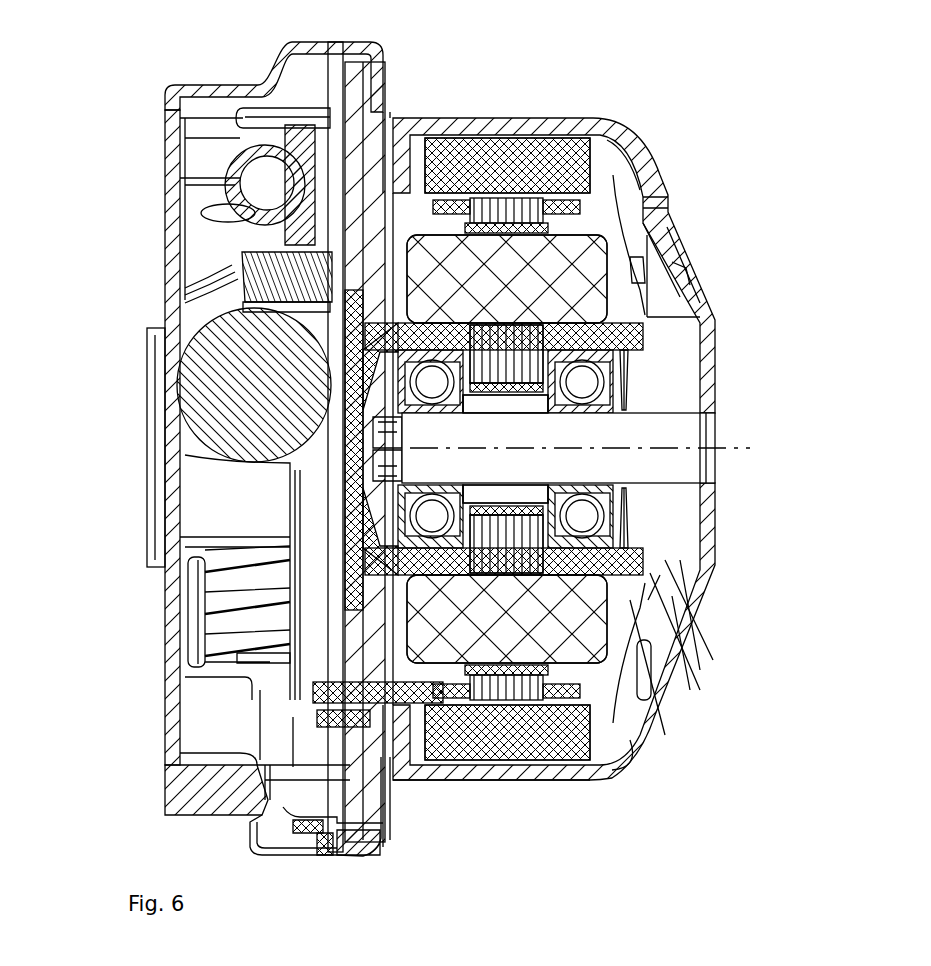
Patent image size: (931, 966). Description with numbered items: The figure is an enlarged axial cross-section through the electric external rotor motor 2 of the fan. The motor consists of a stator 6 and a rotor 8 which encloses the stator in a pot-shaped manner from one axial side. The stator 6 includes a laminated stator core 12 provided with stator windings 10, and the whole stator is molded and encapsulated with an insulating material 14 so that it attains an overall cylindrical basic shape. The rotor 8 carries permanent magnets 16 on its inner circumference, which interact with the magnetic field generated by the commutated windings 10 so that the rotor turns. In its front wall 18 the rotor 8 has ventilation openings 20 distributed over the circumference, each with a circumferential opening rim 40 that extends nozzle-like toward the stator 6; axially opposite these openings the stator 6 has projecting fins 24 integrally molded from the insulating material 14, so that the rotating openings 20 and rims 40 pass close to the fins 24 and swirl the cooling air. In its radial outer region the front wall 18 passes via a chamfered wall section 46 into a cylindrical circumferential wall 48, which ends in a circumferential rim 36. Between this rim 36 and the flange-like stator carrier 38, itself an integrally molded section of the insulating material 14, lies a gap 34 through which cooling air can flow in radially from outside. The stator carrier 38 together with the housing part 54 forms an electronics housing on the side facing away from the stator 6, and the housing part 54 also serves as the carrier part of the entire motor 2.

The electric external rotor motor 2 is at (478, 62).
The stator 6 is at (612, 197).
The rotor 8 is at (611, 123).
The stator windings 10 is at (515, 285).
The laminated stator core 12 is at (527, 370).
The insulating material 14 is at (598, 208).
The permanent magnets 16 is at (516, 145).
The front wall 18 is at (678, 668).
The ventilation openings 20 is at (680, 265).
The projecting fins 24 is at (645, 263).
The gap 34 is at (388, 112).
The circumferential rim 36 is at (410, 782).
The stator carrier 38 is at (360, 832).
The opening rim 40 is at (660, 237).
The chamfered wall section 46 is at (630, 152).
The cylindrical circumferential wall 48 is at (525, 770).
The housing part 54 is at (185, 805).